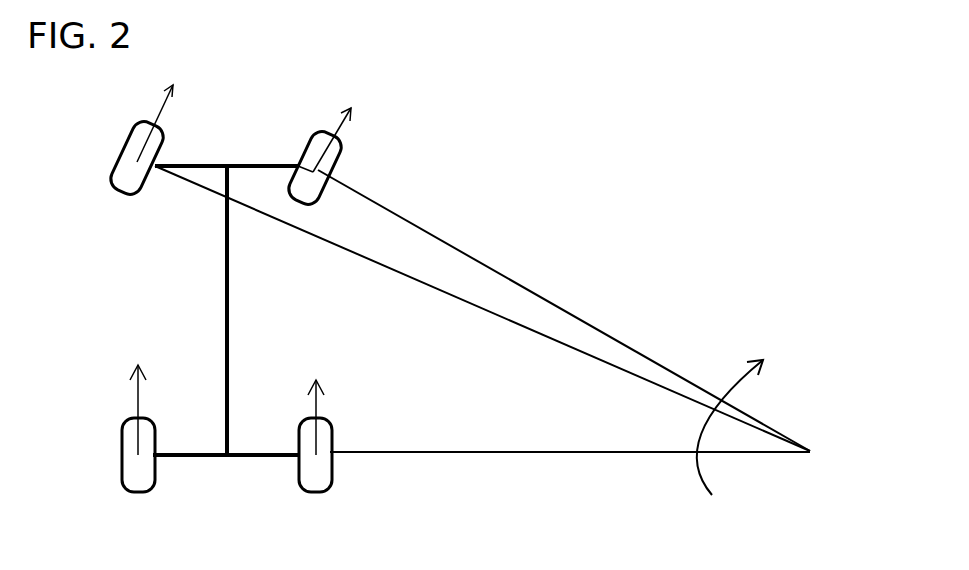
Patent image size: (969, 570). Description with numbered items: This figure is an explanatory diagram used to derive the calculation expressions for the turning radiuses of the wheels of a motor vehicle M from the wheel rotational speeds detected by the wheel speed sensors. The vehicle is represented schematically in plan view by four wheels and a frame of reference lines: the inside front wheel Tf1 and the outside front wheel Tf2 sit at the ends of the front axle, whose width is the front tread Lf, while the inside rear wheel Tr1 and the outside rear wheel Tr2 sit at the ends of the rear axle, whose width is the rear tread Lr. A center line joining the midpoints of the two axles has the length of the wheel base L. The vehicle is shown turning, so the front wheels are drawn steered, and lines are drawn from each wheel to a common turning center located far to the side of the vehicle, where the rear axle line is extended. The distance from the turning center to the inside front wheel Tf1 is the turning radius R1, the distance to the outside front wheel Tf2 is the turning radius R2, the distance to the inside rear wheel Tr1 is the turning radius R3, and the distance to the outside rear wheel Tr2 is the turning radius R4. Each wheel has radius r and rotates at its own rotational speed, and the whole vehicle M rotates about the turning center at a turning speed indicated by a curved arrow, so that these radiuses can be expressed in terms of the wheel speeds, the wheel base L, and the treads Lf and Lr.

The inside front wheel Tf1 is at (332, 144).
The outside front wheel Tf2 is at (158, 128).
The inside rear wheel Tr1 is at (332, 486).
The outside rear wheel Tr2 is at (153, 485).
The turning radius of inside front wheel R1 is at (564, 310).
The turning radius of outside front wheel R2 is at (482, 308).
The turning radius of inside rear wheel R3 is at (570, 439).
The turning radius of outside rear wheel R4 is at (226, 441).
The front tread Lf is at (226, 152).
The rear tread Lr is at (226, 469).
The wheel base L is at (236, 310).
The motor vehicle M is at (332, 303).